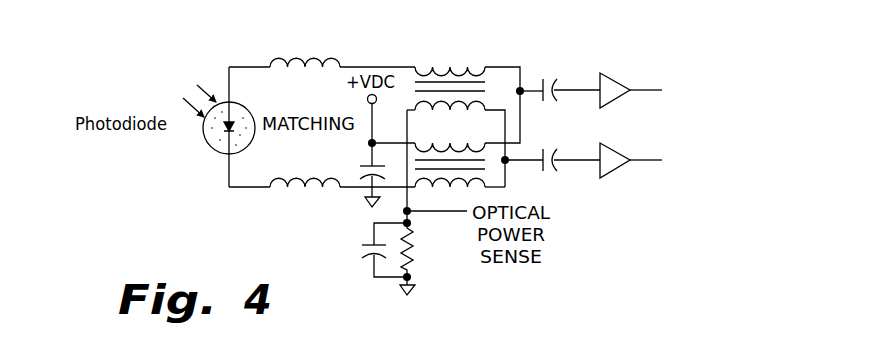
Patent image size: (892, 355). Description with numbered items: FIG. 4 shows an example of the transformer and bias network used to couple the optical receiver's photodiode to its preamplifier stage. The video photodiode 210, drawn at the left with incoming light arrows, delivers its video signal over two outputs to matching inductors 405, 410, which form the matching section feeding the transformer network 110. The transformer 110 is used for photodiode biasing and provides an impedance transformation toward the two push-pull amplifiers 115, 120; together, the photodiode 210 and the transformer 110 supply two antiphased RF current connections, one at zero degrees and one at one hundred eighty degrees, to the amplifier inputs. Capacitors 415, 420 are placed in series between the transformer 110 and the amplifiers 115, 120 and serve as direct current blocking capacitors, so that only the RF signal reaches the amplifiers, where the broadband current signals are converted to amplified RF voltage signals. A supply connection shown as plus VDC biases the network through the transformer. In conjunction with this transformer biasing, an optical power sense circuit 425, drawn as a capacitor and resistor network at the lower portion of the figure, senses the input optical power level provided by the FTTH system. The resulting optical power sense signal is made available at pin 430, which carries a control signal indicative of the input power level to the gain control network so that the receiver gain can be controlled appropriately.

The transformer 110 is at (504, 55).
The push-pull amplifier 115 is at (618, 82).
The push-pull amplifier 120 is at (618, 167).
The video photodiode 210 is at (215, 147).
The matching inductor 405 is at (313, 58).
The matching inductor 410 is at (295, 193).
The DC blocking capacitor 415 is at (557, 73).
The DC blocking capacitor 420 is at (553, 183).
The optical power sense circuit 425 is at (380, 286).
The pin 430 is at (417, 213).